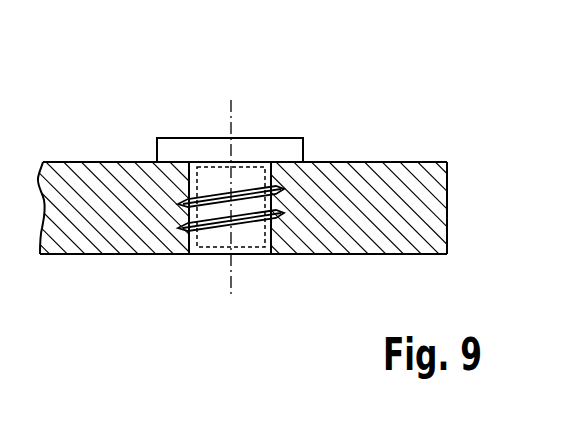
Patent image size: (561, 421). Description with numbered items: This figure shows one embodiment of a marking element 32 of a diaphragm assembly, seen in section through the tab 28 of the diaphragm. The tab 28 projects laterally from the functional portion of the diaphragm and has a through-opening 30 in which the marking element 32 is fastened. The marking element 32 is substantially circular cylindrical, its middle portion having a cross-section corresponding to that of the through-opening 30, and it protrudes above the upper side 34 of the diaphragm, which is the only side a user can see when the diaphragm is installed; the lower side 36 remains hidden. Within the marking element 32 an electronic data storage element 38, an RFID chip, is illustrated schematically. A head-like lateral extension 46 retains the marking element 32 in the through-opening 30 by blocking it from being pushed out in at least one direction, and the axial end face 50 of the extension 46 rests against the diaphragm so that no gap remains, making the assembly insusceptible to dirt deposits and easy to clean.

The tab 28 is at (354, 186).
The through-opening 30 is at (278, 246).
The marking element 32 is at (252, 111).
The upper side 34 is at (109, 162).
The lower side 36 is at (85, 254).
The electronic data storage element 38 is at (245, 247).
The lateral extension 46 is at (279, 150).
The axial end face 50 is at (175, 163).